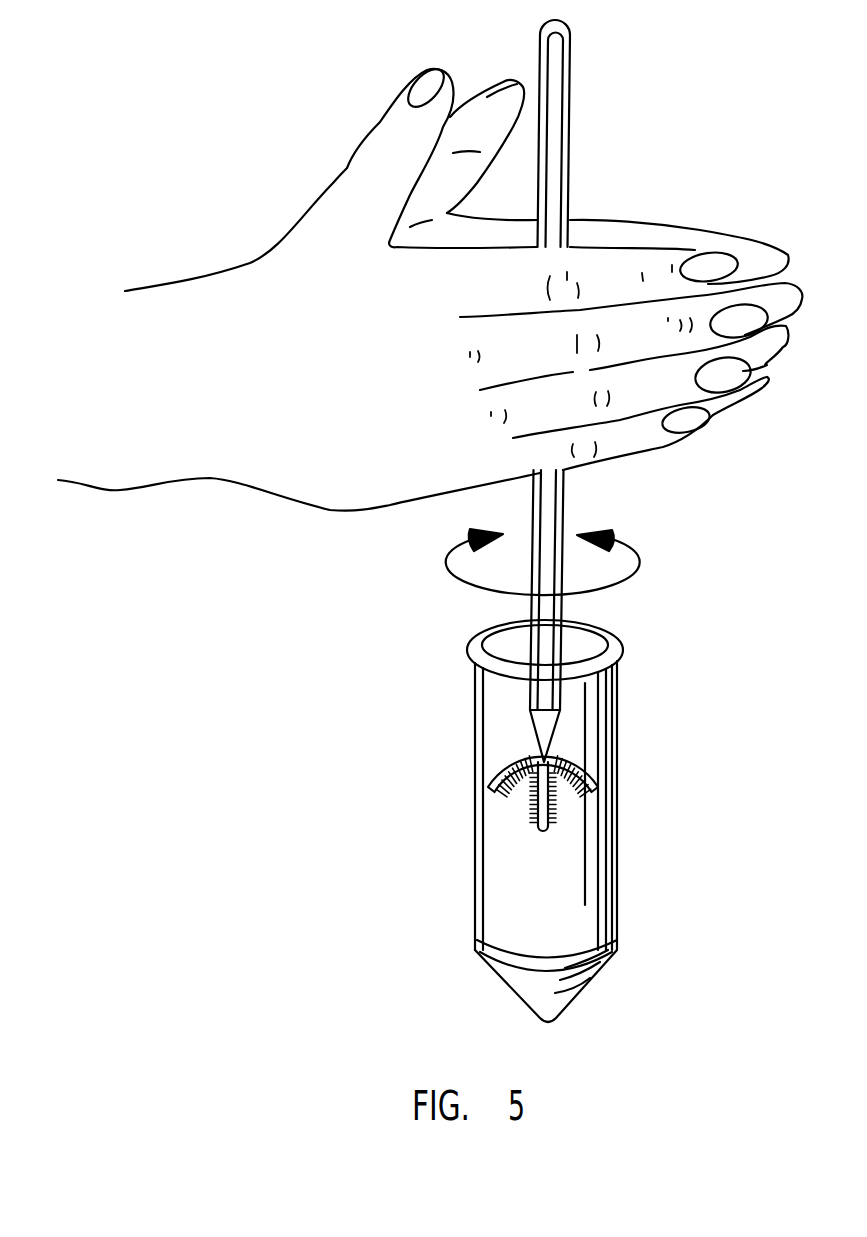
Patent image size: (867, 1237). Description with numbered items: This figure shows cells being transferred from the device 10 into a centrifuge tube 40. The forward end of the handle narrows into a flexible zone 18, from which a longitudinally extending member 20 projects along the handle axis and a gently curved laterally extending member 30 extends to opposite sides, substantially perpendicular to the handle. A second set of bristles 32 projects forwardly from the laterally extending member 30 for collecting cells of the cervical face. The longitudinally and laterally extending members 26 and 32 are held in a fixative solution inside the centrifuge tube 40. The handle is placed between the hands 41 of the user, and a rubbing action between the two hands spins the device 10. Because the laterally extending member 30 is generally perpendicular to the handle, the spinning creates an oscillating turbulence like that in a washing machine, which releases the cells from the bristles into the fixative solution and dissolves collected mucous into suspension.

The device 10 is at (570, 498).
The flexible zone 18 is at (545, 732).
The longitudinally extending member 20 is at (530, 820).
The longitudinally extending member 26 is at (533, 815).
The laterally extending member 30 is at (575, 770).
The second set of bristles 32 is at (502, 793).
The centrifuge tube 40 is at (587, 893).
The hands 41 is at (328, 255).